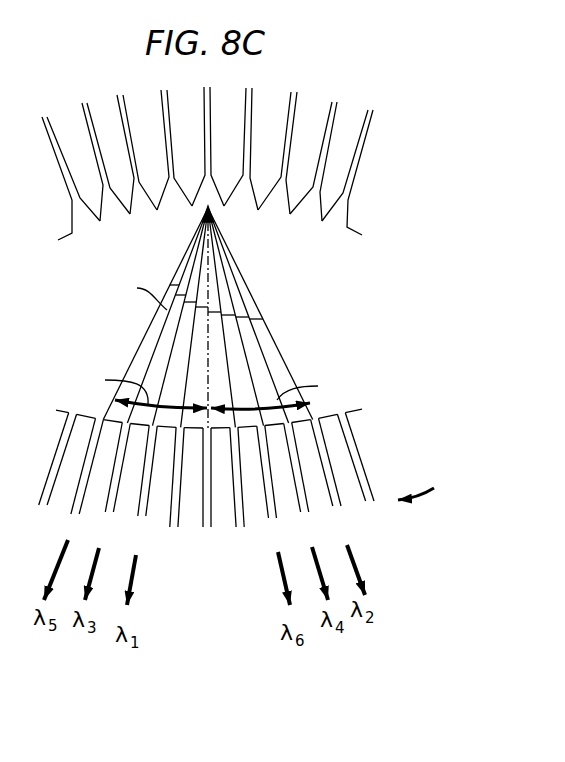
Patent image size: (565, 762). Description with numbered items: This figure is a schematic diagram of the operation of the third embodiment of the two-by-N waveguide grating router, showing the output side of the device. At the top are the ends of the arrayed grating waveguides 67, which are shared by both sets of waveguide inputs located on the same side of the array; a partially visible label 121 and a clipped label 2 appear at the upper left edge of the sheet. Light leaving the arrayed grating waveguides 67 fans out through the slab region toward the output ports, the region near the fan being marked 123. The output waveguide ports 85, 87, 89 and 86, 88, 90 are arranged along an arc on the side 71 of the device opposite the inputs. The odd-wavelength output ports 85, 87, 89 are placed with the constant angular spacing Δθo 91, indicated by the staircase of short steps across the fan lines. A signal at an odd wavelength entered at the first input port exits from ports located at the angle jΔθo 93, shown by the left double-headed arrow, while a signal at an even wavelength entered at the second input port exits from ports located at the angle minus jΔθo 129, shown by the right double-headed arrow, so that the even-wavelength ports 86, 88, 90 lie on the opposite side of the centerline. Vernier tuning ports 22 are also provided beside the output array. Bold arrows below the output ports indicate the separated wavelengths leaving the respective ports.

The first slab waveguide region (label clipped) 121 is at (25, 110).
The clipped reference numeral (122) 2 is at (4, 140).
The arrayed grating waveguides 67 is at (250, 108).
The second slab (free propagation) region 123 is at (47, 312).
The constant angular spacing Δθo 91 is at (98, 278).
The output angle jΔθo 93 is at (83, 365).
The output angle -jΔθo 129 is at (335, 367).
The vernier tuning ports 22 is at (367, 445).
The side of the arrayed grating waveguides 71 is at (429, 485).
The output waveguide port 89 is at (73, 502).
The output waveguide port 87 is at (103, 513).
The output waveguide port 85 is at (142, 518).
The output waveguide port 90 is at (273, 520).
The output waveguide port 88 is at (310, 513).
The output waveguide port 86 is at (343, 502).